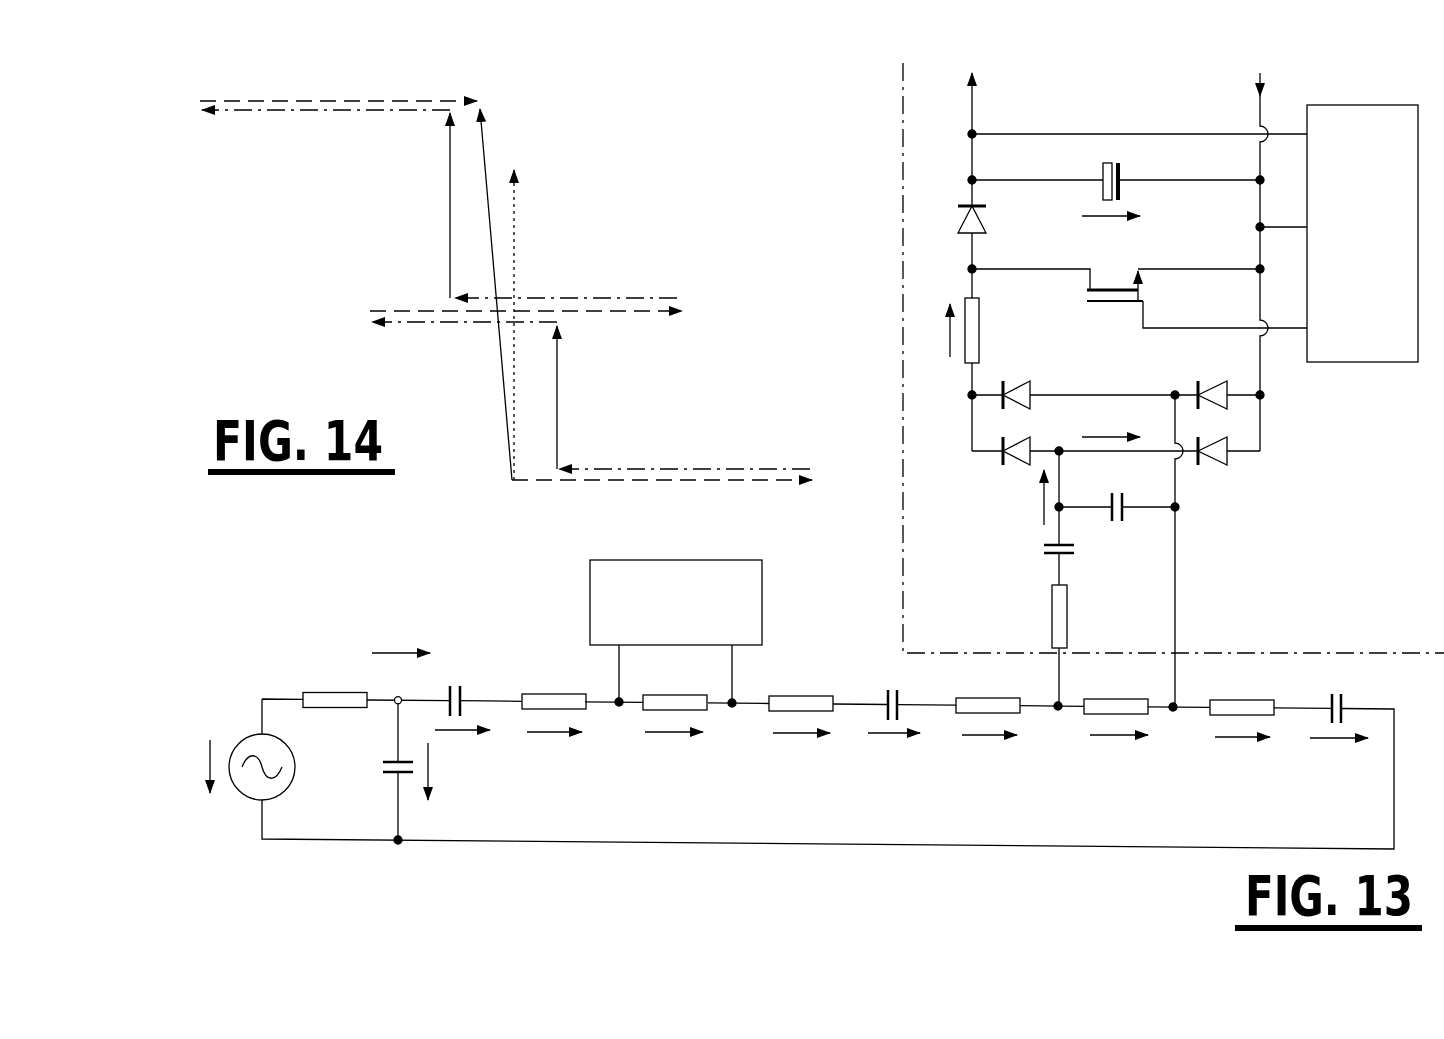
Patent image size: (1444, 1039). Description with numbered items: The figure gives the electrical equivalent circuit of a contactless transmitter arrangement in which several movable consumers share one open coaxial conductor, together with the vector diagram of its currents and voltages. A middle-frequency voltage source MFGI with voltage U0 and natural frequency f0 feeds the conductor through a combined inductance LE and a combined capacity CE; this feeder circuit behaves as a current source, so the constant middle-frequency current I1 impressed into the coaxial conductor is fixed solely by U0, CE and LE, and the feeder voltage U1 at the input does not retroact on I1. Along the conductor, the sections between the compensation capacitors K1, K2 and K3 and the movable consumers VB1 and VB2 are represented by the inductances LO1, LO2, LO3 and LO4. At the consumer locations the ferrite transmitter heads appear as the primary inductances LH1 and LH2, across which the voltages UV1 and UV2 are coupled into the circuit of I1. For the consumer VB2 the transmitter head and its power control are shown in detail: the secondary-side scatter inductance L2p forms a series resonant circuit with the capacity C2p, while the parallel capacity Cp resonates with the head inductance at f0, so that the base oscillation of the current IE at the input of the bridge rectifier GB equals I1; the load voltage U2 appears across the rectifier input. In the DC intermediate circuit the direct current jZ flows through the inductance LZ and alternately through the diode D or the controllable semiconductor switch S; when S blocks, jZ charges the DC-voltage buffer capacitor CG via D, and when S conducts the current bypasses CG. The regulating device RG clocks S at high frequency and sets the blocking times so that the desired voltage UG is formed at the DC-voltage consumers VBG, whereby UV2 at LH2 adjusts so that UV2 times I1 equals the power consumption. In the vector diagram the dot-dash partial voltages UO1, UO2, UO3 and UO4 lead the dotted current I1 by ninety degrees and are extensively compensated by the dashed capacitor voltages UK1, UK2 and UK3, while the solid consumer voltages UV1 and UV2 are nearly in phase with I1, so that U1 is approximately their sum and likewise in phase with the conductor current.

In FIG. 13, the middle-frequency voltage source MFGI is at (288, 788).
In FIG. 13, the inductance LE is at (320, 690).
In FIG. 13, the capacity CE is at (394, 764).
In FIG. 13, the compensation capacitor K1 is at (456, 692).
In FIG. 13, the inductance of coaxial conductor section LO1 is at (538, 692).
In FIG. 13, the primary inductance of transmitter head LH1 is at (666, 692).
In FIG. 13, the movable consumer VB1 is at (676, 631).
In FIG. 13, the inductance of coaxial conductor section LO2 is at (788, 692).
In FIG. 13, the compensation capacitor K2 is at (882, 690).
In FIG. 13, the inductance of coaxial conductor section LO3 is at (973, 690).
In FIG. 13, the primary inductance of transmitter head LH2 is at (1101, 692).
In FIG. 13, the inductance of coaxial conductor section LO4 is at (1230, 694).
In FIG. 13, the compensation capacitor K3 is at (1346, 694).
In FIG. 13, the movable consumer VB2 is at (1173, 358).
In FIG. 13, the regulating device RG is at (1362, 233).
In FIG. 13, the diode D is at (986, 218).
In FIG. 13, the DC-voltage buffer capacitor CG is at (1116, 170).
In FIG. 13, the inductance LZ is at (998, 330).
In FIG. 13, the controllable semiconductor switch S is at (1139, 298).
In FIG. 13, the rectifier bridge GB is at (1267, 428).
In FIG. 13, the capacity Cp is at (1124, 498).
In FIG. 13, the capacity C2p is at (1074, 549).
In FIG. 13, the secondary-side scatter inductance L2p is at (1068, 615).
In FIG. 13, the DC-voltage consumer VBG is at (1139, 105).
In FIG. 13, the voltage UG is at (1135, 220).
In FIG. 13, the load voltage U2 is at (1111, 416).
In FIG. 13, the current at input of bridge rectifier IE is at (1024, 498).
In FIG. 13, the direct current jZ is at (932, 331).
In FIG. 13, the voltage of middle-frequency voltage source U0 is at (210, 740).
In FIG. 13, the natural frequency f0 is at (238, 790).
In FIG. 14, the coaxial conductor current I1 is at (520, 172).
In FIG. 13, the coaxial conductor current I1 is at (401, 635).
In FIG. 14, the feeder voltage U1 is at (486, 112).
In FIG. 13, the feeder voltage U1 is at (432, 770).
In FIG. 14, the compensation capacitor voltage UK1 is at (810, 477).
In FIG. 13, the compensation capacitor voltage UK1 is at (452, 736).
In FIG. 14, the compensation capacitor voltage UK2 is at (680, 318).
In FIG. 13, the compensation capacitor voltage UK2 is at (880, 737).
In FIG. 14, the compensation capacitor voltage UK3 is at (472, 98).
In FIG. 13, the compensation capacitor voltage UK3 is at (1318, 742).
In FIG. 14, the partial voltage UO1 is at (565, 465).
In FIG. 13, the partial voltage UO1 is at (548, 736).
In FIG. 14, the partial voltage UO2 is at (378, 330).
In FIG. 13, the partial voltage UO2 is at (790, 737).
In FIG. 14, the partial voltage UO3 is at (449, 294).
In FIG. 13, the partial voltage UO3 is at (972, 739).
In FIG. 14, the partial voltage UO4 is at (210, 118).
In FIG. 13, the partial voltage UO4 is at (1222, 741).
In FIG. 14, the consumer voltage UV1 is at (562, 330).
In FIG. 13, the consumer voltage UV1 is at (668, 736).
In FIG. 14, the consumer voltage UV2 is at (444, 122).
In FIG. 13, the consumer voltage UV2 is at (1100, 739).